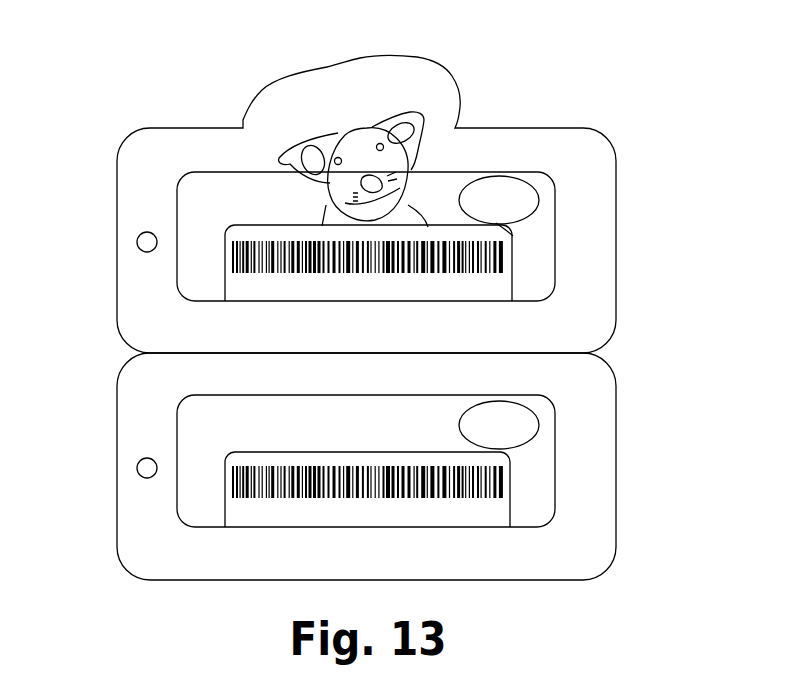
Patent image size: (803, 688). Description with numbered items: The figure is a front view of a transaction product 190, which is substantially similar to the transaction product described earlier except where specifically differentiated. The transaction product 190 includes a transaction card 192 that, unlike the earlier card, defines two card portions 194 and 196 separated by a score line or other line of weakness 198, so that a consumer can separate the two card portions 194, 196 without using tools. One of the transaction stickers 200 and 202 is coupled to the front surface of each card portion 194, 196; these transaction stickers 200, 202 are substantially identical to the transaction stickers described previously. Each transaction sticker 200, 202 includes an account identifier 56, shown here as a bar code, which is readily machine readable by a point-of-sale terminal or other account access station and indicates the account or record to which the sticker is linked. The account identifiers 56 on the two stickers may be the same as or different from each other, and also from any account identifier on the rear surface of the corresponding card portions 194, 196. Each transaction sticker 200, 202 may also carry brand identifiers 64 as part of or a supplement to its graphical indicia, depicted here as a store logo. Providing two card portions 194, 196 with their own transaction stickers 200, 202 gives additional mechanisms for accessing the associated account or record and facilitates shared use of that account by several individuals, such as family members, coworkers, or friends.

The transaction product 190 is at (166, 56).
The transaction card 192 is at (590, 190).
The card portion 194 is at (588, 318).
The card portion 196 is at (585, 478).
The line of weakness 198 is at (551, 355).
The transaction sticker 200 is at (177, 265).
The transaction sticker 202 is at (177, 490).
The account identifier 56 is at (225, 257).
The brand identifier 64 is at (532, 176).